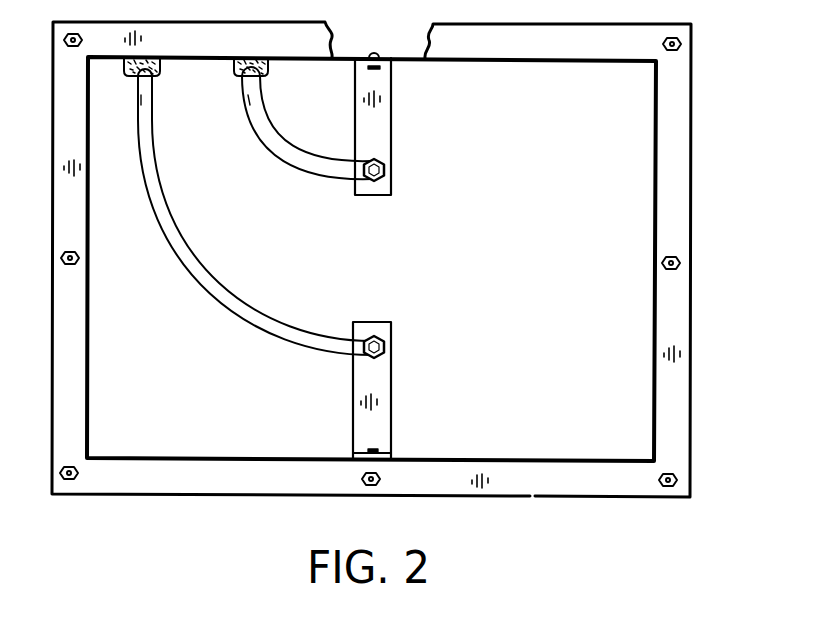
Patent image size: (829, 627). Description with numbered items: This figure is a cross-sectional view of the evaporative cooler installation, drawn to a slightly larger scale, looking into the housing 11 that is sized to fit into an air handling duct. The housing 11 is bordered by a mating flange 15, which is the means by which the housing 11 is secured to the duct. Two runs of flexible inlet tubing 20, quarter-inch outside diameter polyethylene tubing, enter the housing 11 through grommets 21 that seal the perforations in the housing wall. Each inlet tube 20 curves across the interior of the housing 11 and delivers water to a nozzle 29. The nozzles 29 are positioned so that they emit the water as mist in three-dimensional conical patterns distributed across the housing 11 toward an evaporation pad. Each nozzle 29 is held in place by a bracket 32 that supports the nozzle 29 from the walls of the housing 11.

The housing 11 is at (483, 63).
The mating flange 15 is at (677, 197).
The flexible inlet tubing 20 is at (207, 290).
The grommet 21 is at (162, 64).
The nozzle 29 is at (381, 336).
The bracket 32 is at (372, 424).